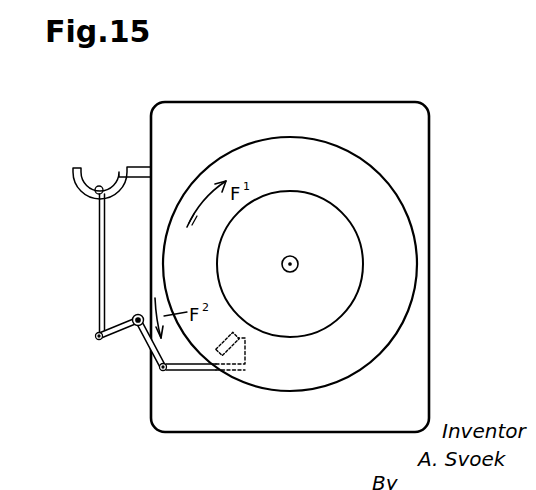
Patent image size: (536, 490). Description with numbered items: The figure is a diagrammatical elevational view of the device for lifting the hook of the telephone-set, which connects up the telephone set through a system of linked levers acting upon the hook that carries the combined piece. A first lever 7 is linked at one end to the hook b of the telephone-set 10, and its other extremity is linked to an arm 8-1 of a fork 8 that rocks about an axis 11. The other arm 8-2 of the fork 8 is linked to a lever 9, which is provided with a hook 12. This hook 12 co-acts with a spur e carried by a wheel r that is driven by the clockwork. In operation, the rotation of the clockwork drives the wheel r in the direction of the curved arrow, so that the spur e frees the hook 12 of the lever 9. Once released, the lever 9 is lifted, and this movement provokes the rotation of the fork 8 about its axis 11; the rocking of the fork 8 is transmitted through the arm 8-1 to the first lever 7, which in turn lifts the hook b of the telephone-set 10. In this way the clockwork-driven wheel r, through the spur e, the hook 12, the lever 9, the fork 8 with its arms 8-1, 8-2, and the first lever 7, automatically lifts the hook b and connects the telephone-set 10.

The telephone-set 10 is at (397, 398).
The wheel r is at (388, 217).
The hook b is at (76, 177).
The first lever 7 is at (100, 243).
The fork 8 is at (102, 341).
The arm of the fork 8-1 is at (115, 328).
The other arm of the fork 8-2 is at (152, 355).
The axis 11 is at (135, 316).
The lever 9 is at (210, 368).
The hook 12 is at (250, 353).
The spur e is at (233, 337).